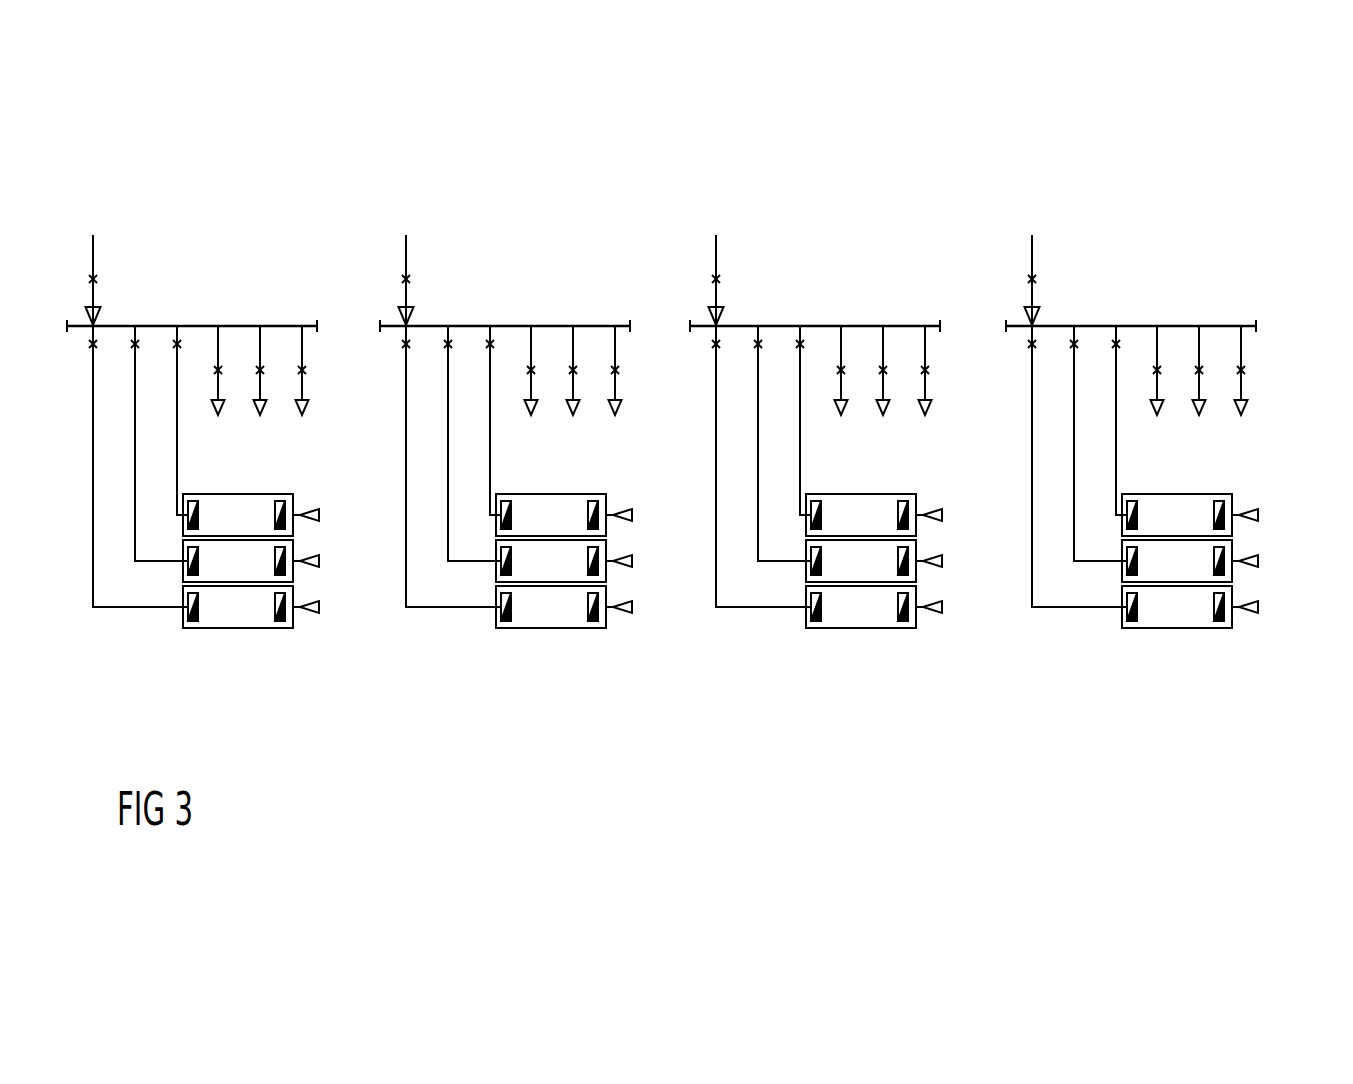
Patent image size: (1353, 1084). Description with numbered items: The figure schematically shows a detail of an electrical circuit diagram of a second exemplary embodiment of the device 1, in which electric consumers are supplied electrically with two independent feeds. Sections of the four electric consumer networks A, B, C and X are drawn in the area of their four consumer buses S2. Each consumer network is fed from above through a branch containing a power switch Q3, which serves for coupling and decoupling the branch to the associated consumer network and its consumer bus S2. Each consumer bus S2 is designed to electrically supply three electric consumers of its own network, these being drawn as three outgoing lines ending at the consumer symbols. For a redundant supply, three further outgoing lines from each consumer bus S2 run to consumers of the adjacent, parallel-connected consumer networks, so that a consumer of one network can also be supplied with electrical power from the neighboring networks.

The device 1 is at (148, 201).
The power switch Q3 is at (105, 290).
The consumer bus S2 is at (208, 326).